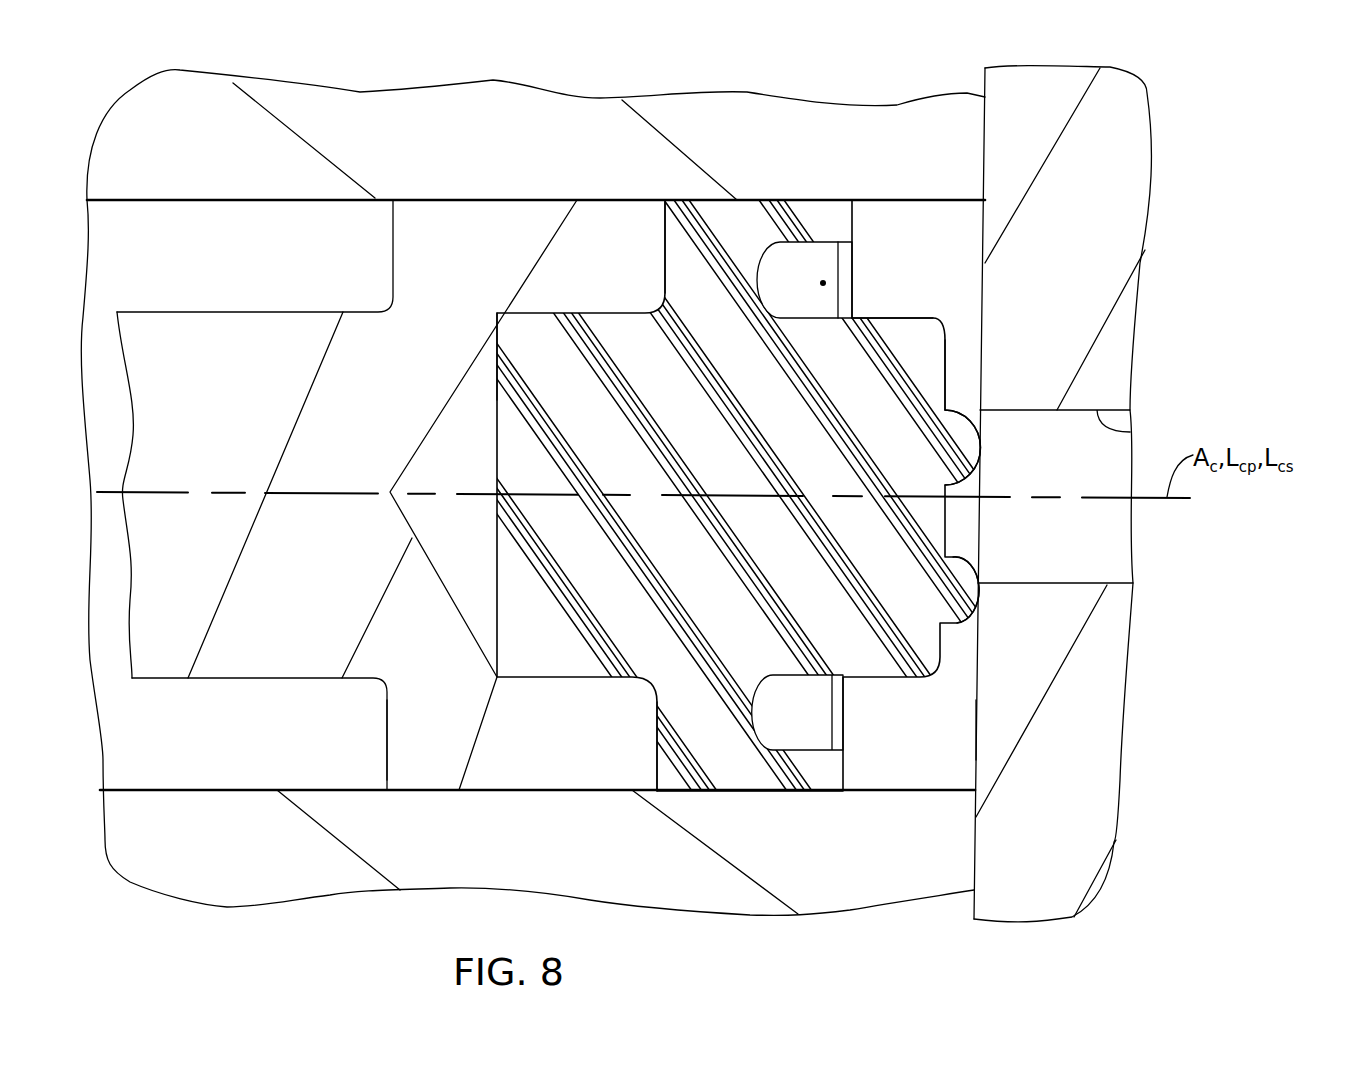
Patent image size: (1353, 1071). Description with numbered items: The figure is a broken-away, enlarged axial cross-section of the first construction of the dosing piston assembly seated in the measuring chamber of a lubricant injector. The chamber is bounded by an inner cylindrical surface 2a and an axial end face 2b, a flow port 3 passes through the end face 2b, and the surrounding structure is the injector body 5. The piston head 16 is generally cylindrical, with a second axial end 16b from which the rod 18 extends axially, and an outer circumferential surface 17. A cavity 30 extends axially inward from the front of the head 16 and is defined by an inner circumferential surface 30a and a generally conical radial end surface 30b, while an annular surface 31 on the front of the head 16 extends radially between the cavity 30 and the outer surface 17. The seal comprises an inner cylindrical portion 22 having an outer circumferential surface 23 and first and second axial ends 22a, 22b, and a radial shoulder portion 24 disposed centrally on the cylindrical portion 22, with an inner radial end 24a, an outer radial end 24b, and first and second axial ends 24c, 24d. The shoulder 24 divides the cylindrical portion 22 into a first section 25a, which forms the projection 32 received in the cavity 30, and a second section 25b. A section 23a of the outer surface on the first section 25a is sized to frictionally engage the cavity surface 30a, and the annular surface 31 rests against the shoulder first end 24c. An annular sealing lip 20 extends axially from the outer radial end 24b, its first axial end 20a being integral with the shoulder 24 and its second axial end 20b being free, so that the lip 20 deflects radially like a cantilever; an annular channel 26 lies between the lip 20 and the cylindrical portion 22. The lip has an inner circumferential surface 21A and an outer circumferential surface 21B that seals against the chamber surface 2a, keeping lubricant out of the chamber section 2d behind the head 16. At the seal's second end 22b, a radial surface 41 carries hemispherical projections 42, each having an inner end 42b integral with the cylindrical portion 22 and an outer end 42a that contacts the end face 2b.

The inner cylindrical surface 2a is at (762, 782).
The axial end face 2b is at (974, 733).
The chamber section 2d is at (200, 240).
The flow port 3 is at (1133, 430).
The injector body 5 is at (1127, 207).
The piston head 16 is at (423, 823).
The second axial end 16b is at (382, 732).
The outer circumferential surface 17 is at (497, 793).
The rod 18 is at (262, 275).
The sealing lip 20 is at (830, 797).
The first axial end 20a is at (770, 203).
The second axial end 20b is at (850, 203).
The inner circumferential surface 21A is at (823, 243).
The outer circumferential surface 21B is at (813, 200).
The inner cylindrical portion 22 is at (598, 682).
The first axial end 22a is at (947, 360).
The second axial end 22b is at (498, 358).
The outer circumferential surface 23 is at (910, 317).
The section of outer surface 23a is at (587, 313).
The radial shoulder portion 24 is at (670, 252).
The inner radial end 24a is at (662, 303).
The outer radial end 24b is at (707, 203).
The first axial end 24c is at (657, 757).
The second axial end 24d is at (750, 720).
The first section 25a is at (553, 327).
The second section 25b is at (877, 667).
The annular channel 26 is at (825, 283).
The cavity 30 is at (427, 537).
The inner circumferential surface 30a is at (572, 672).
The radial end surface 30b is at (428, 433).
The annular surface 31 is at (660, 740).
The projection 32 is at (506, 600).
The radial surface 41 is at (947, 380).
The projections 42 is at (978, 447).
The outer end 42a is at (978, 455).
The inner end 42b is at (940, 455).